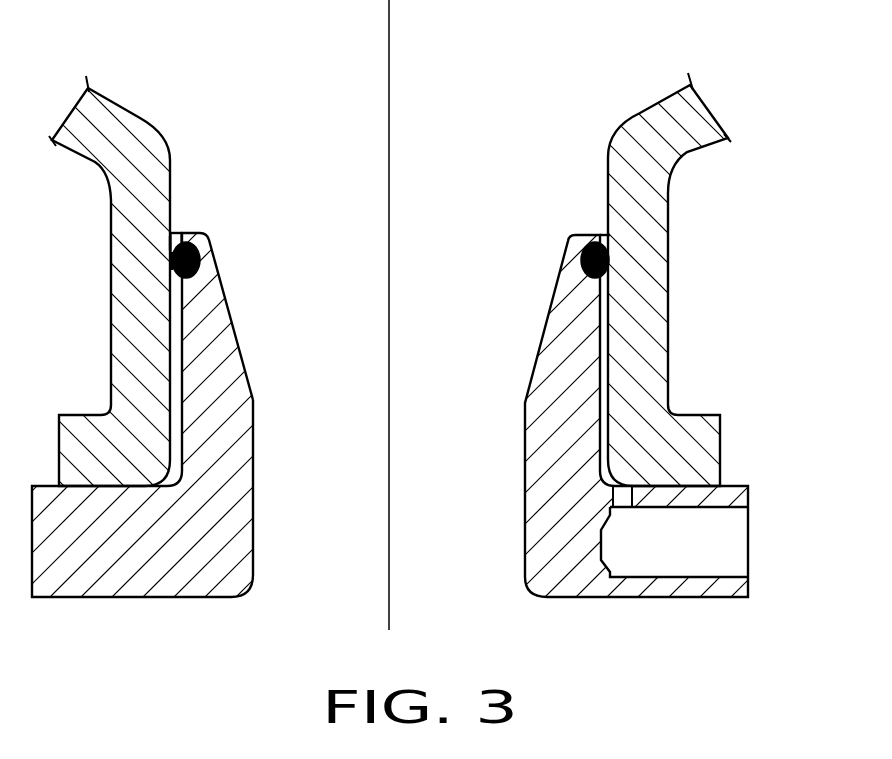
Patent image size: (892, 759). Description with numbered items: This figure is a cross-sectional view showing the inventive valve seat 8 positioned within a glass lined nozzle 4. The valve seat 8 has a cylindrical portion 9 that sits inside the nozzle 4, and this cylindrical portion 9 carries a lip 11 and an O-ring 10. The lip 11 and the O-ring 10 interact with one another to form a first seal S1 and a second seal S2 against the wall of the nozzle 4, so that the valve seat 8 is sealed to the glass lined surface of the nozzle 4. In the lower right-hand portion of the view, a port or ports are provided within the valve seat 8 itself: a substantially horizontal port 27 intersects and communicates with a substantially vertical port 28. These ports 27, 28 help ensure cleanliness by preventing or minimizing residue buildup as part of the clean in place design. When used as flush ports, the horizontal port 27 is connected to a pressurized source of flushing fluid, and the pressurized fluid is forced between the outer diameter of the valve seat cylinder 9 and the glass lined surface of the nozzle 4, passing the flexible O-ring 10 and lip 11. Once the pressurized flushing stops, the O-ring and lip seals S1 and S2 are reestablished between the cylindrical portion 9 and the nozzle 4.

The glass lined nozzle 4 is at (633, 117).
The valve seat 8 is at (253, 453).
The cylindrical portion 9 is at (208, 300).
The O-ring 10 is at (174, 236).
The lip 11 is at (176, 246).
The first seal S1 is at (170, 242).
The second seal S2 is at (172, 261).
The horizontal port 27 is at (722, 542).
The vertical port 28 is at (622, 498).